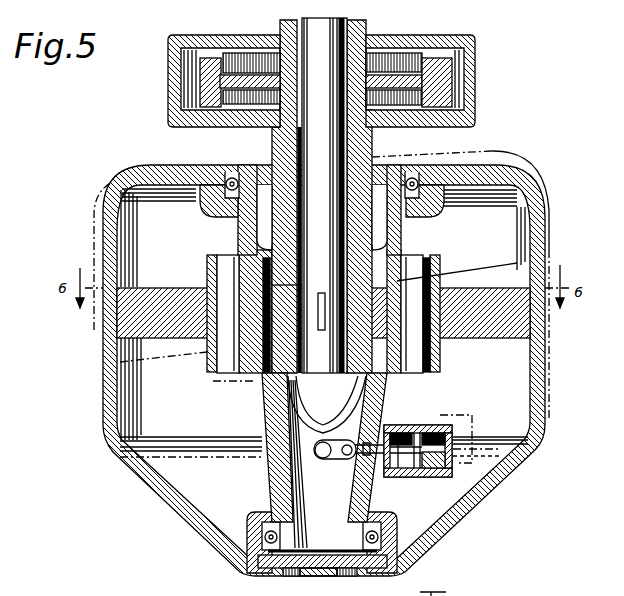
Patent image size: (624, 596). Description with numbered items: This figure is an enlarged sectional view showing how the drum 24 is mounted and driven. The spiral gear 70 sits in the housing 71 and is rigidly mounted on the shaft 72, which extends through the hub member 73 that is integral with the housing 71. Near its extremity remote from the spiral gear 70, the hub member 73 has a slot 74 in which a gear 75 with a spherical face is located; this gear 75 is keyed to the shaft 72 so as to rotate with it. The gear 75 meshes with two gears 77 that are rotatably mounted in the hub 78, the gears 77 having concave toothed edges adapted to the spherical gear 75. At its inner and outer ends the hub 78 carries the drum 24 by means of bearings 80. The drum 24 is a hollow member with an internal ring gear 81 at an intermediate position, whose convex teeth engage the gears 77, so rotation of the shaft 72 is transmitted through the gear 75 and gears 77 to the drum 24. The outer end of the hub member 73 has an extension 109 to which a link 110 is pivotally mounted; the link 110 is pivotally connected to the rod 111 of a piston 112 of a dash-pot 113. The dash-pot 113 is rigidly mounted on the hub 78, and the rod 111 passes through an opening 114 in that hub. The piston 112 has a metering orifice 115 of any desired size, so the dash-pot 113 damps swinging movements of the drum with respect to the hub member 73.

The drum 24 is at (543, 225).
The spiral gear 70 is at (444, 75).
The housing 71 is at (475, 98).
The shaft 72 is at (338, 20).
The hub member 73 is at (369, 147).
The slot 74 is at (283, 285).
The gear 75 is at (317, 326).
The gear 77 is at (207, 290).
The hub 78 is at (382, 392).
The bearing 80 is at (235, 178).
The ring gear 81 is at (172, 340).
The extension 109 is at (297, 418).
The link 110 is at (323, 462).
The rod 111 is at (402, 468).
The piston 112 is at (422, 425).
The dash-pot 113 is at (455, 428).
The opening 114 is at (360, 457).
The metering orifice 115 is at (432, 468).